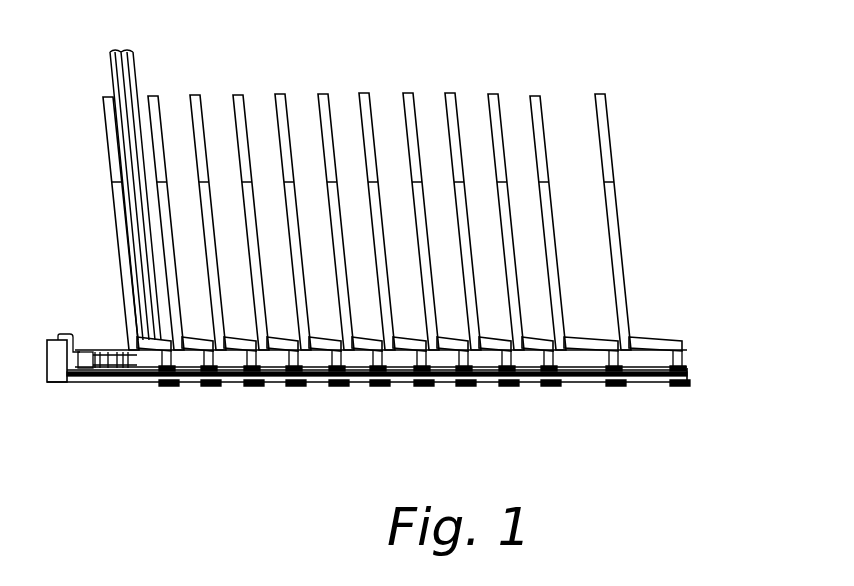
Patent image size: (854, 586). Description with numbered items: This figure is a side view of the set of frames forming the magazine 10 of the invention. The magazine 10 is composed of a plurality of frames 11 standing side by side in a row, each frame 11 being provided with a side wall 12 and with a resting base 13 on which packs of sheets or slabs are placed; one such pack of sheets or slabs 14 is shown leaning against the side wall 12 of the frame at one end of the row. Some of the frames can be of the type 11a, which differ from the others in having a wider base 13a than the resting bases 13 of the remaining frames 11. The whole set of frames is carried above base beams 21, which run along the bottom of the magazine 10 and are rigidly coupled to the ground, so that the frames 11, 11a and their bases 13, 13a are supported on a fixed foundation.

The magazine 10 is at (648, 166).
The frames 11 is at (330, 94).
The frames of the type with a wider base 11a is at (540, 96).
The side wall 12 is at (120, 209).
The resting base 13 is at (152, 343).
The wider base 13a is at (595, 333).
The pack of sheets or slabs 14 is at (133, 62).
The base beams 21 is at (590, 376).